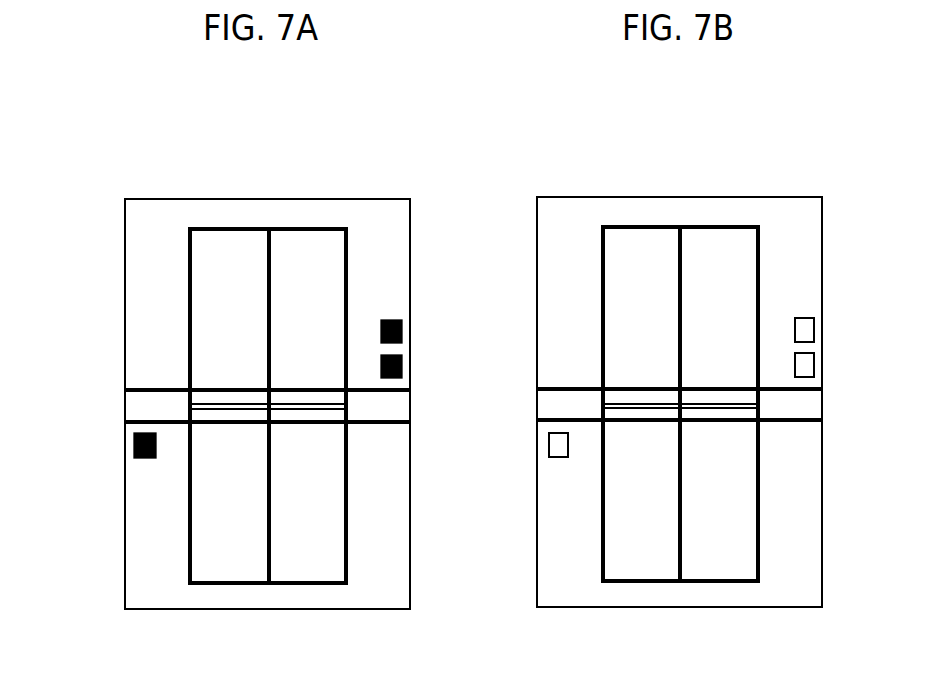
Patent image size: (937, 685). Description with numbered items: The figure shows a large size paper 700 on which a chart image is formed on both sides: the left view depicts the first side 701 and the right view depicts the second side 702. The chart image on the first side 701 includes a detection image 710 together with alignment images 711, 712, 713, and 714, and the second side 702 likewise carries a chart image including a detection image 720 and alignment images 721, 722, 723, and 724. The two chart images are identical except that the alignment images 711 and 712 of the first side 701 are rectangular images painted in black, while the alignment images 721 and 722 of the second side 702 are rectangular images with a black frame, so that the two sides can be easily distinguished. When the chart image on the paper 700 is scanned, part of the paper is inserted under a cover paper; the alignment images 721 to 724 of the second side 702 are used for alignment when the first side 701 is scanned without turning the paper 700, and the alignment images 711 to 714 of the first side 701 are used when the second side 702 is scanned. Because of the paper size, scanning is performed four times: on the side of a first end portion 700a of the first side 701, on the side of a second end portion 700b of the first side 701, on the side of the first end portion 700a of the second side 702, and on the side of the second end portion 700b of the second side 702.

In FIG. 7A, the large size paper 700 is at (244, 393).
In FIG. 7B, the large size paper 700 is at (666, 385).
In FIG. 7A, the first end portion 700a is at (137, 213).
In FIG. 7B, the first end portion 700a is at (548, 212).
In FIG. 7A, the second end portion 700b is at (145, 594).
In FIG. 7B, the second end portion 700b is at (555, 593).
In FIG. 7A, the first side 701 is at (198, 211).
In FIG. 7B, the second side 702 is at (607, 209).
In FIG. 7A, the detection image 710 is at (357, 236).
In FIG. 7A, the alignment image 711 is at (144, 465).
In FIG. 7A, the alignment image 712 is at (393, 309).
In FIG. 7A, the alignment image 713 is at (363, 423).
In FIG. 7A, the alignment image 714 is at (155, 389).
In FIG. 7B, the detection image 720 is at (767, 235).
In FIG. 7B, the alignment image 721 is at (552, 465).
In FIG. 7B, the alignment image 722 is at (803, 307).
In FIG. 7B, the alignment image 723 is at (773, 421).
In FIG. 7B, the alignment image 724 is at (563, 387).